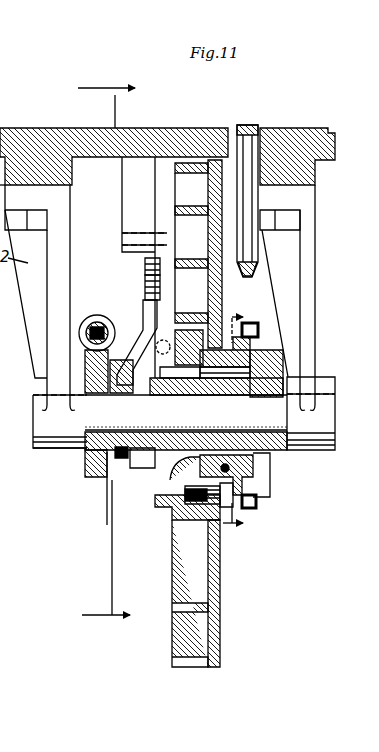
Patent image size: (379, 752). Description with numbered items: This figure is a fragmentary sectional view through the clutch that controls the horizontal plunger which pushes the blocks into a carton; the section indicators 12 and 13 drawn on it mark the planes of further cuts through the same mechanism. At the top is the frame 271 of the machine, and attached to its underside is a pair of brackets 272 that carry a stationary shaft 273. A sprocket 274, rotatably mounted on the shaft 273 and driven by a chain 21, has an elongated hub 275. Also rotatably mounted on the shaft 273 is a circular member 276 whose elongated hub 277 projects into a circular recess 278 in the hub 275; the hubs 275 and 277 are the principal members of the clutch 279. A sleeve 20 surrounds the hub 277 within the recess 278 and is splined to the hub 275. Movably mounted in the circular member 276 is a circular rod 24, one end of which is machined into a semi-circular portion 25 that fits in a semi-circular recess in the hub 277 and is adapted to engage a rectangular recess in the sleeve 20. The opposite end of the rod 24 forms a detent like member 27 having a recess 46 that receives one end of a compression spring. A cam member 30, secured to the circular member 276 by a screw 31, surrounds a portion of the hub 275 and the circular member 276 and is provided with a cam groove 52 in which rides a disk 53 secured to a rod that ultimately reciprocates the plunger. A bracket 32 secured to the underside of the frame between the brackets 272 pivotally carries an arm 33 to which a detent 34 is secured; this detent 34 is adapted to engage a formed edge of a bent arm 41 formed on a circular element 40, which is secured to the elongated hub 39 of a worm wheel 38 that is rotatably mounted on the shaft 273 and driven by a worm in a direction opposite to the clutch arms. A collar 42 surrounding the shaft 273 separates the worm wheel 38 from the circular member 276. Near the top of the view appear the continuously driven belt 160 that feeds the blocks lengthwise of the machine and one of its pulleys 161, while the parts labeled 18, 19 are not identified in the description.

The section line 12- 12 is at (105, 85).
The section line 13- 13 is at (250, 314).
The pivot pin 18 is at (82, 327).
The pin core 19 is at (97, 333).
The sleeve 20 is at (255, 368).
The chain 21 is at (258, 503).
The circular rod 24 is at (187, 373).
The semi-circular portion 25 is at (222, 375).
The detent like member 27 is at (172, 367).
The cam member 30 is at (198, 667).
The screw 31 is at (233, 497).
The bracket 32 is at (127, 197).
The arm 33 is at (160, 266).
The detent 34 is at (148, 277).
The worm wheel 38 is at (86, 477).
The elongated hub 39 is at (113, 458).
The circular element 40 is at (120, 458).
The bent arm 41 is at (147, 306).
The collar 42 is at (148, 398).
The recess 46 is at (138, 326).
The cam groove 52 is at (212, 625).
The disk 53 is at (43, 421).
The belt 160 is at (248, 125).
The pulley 161 is at (273, 134).
The frame 271 is at (203, 128).
The brackets 272 is at (308, 268).
The stationary shaft 273 is at (95, 424).
The sprocket 274 is at (258, 495).
The elongated hub 275 is at (255, 343).
The circular member 276 is at (160, 507).
The elongated hub 277 is at (255, 457).
The circular recess 278 is at (200, 457).
The clutch 279 is at (92, 500).